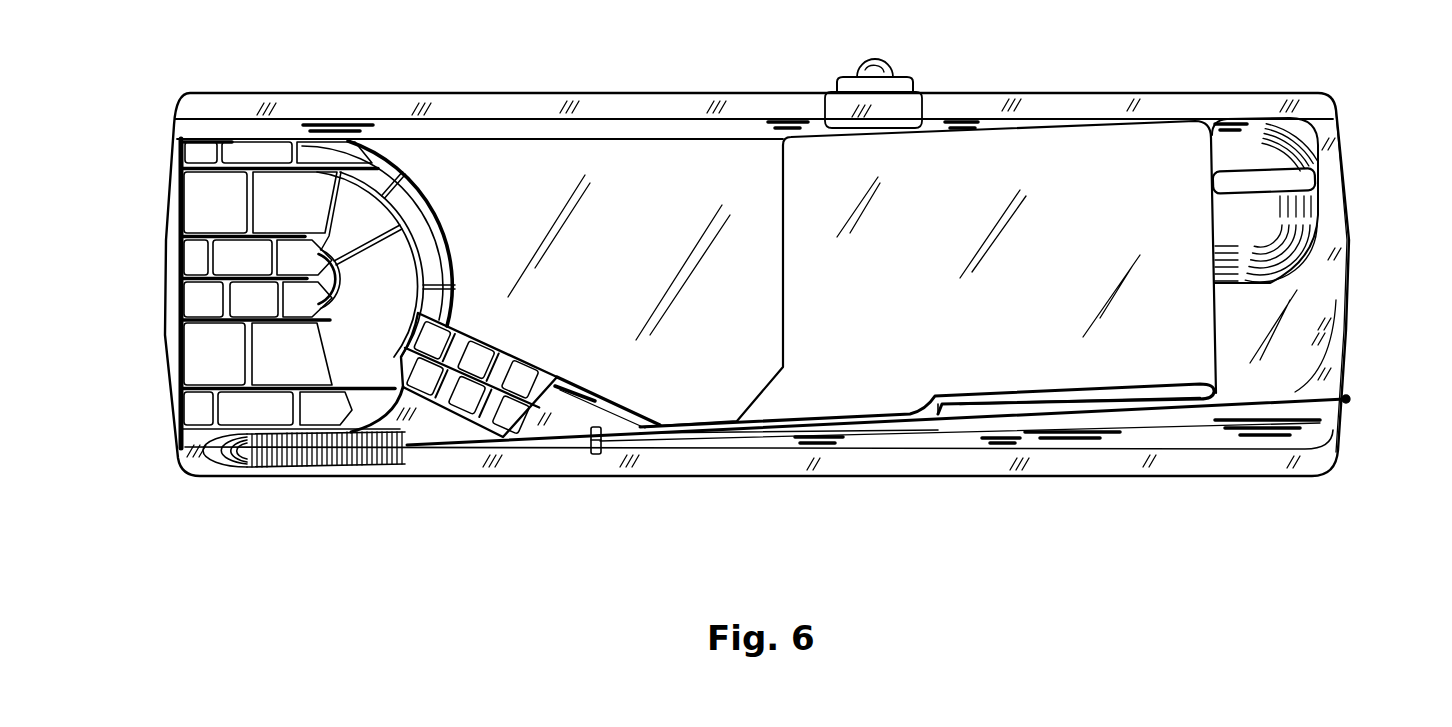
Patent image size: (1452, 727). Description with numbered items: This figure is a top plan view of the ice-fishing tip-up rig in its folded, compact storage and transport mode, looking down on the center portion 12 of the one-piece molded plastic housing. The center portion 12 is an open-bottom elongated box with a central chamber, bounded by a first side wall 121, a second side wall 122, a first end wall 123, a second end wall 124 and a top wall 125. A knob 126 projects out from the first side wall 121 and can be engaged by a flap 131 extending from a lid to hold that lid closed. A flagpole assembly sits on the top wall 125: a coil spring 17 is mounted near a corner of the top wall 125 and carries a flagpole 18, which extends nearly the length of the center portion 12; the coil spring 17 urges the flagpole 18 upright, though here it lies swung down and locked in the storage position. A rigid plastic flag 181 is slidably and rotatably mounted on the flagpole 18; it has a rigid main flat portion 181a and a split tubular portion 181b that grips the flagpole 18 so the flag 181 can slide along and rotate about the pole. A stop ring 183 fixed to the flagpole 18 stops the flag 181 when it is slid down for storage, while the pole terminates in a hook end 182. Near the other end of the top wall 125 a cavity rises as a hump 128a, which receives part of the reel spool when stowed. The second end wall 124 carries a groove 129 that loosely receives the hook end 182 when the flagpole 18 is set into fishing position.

The center portion 12 is at (1327, 280).
The coil spring 17 is at (270, 458).
The flagpole 18 is at (477, 448).
The first side wall 121 is at (497, 92).
The second side wall 122 is at (908, 473).
The first end wall 123 is at (163, 273).
The second end wall 124 is at (1348, 228).
The top wall 125 is at (652, 165).
The knob 126 is at (877, 62).
The hump 128a is at (422, 227).
The groove 129 is at (1317, 170).
The flag (flap) 131 is at (853, 82).
The flag 181 is at (783, 325).
The main flat portion 181a is at (1062, 153).
The split tubular portion 181b is at (778, 427).
The hook end 182 is at (1350, 402).
The stop ring 183 is at (597, 460).